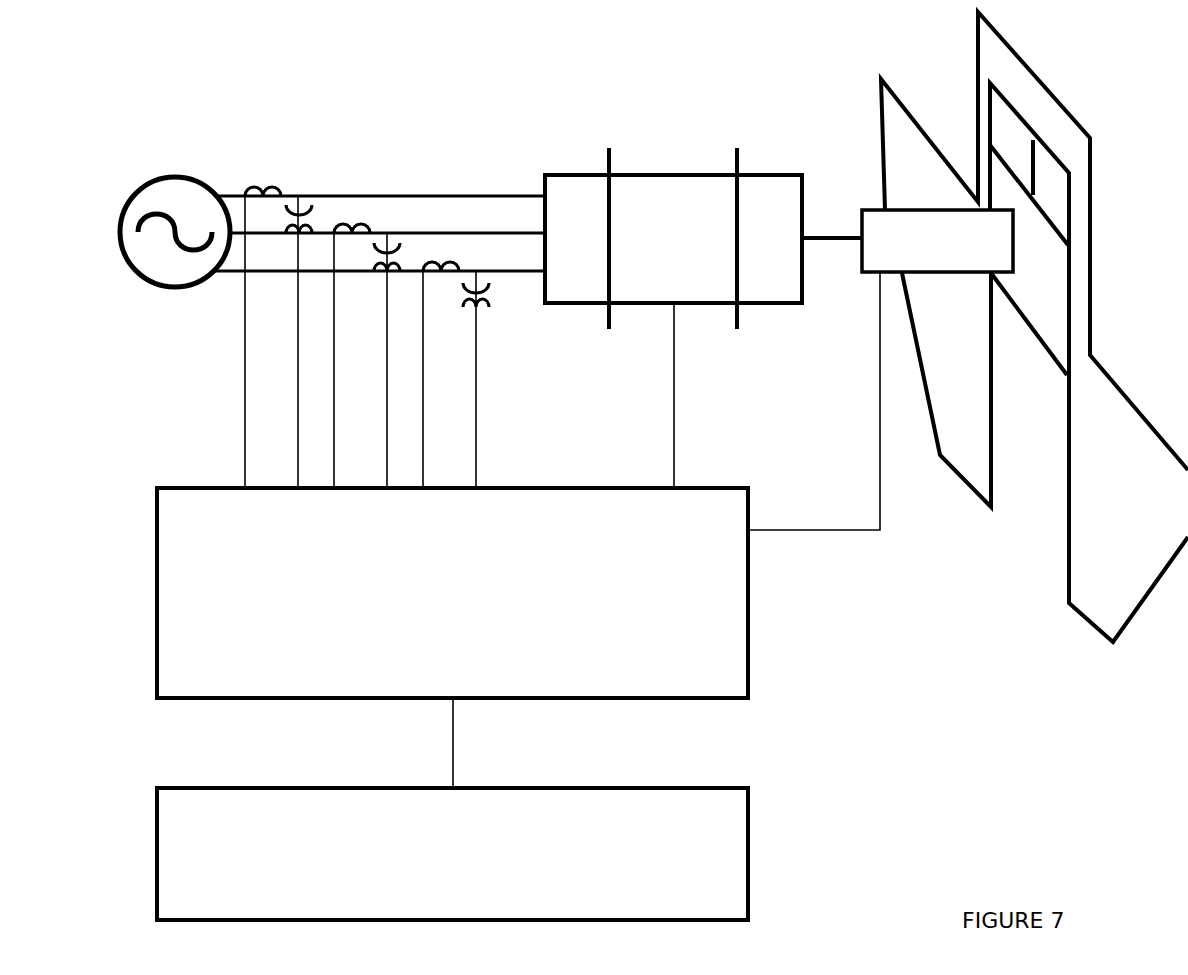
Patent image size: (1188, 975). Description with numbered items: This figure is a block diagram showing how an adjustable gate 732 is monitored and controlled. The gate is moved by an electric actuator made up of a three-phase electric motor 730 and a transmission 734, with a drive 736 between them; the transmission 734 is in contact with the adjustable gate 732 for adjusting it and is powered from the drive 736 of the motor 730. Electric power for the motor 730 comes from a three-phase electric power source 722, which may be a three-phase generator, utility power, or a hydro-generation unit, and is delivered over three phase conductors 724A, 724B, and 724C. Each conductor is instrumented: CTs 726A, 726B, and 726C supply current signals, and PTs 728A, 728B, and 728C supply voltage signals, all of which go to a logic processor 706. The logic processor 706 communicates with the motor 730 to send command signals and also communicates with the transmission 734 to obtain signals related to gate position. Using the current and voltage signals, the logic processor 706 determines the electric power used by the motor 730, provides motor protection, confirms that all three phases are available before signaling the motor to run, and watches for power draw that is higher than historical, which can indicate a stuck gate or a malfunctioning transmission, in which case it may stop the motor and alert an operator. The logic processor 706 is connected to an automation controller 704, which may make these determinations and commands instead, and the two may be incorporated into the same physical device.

The three-phase electric power source 722 is at (170, 177).
The phase conductor 724A is at (502, 186).
The phase conductor 724B is at (500, 225).
The phase conductor 724C is at (500, 262).
The CT 726A is at (254, 188).
The CT 726B is at (343, 226).
The CT 726C is at (434, 263).
The PT 728A is at (302, 207).
The PT 728B is at (392, 244).
The PT 728C is at (488, 298).
The electric motor 730 is at (643, 175).
The adjustable gate 732 is at (1057, 331).
The transmission 734 is at (870, 208).
The drive 736 is at (850, 236).
The logic processor 706 is at (452, 593).
The automation controller 704 is at (452, 809).